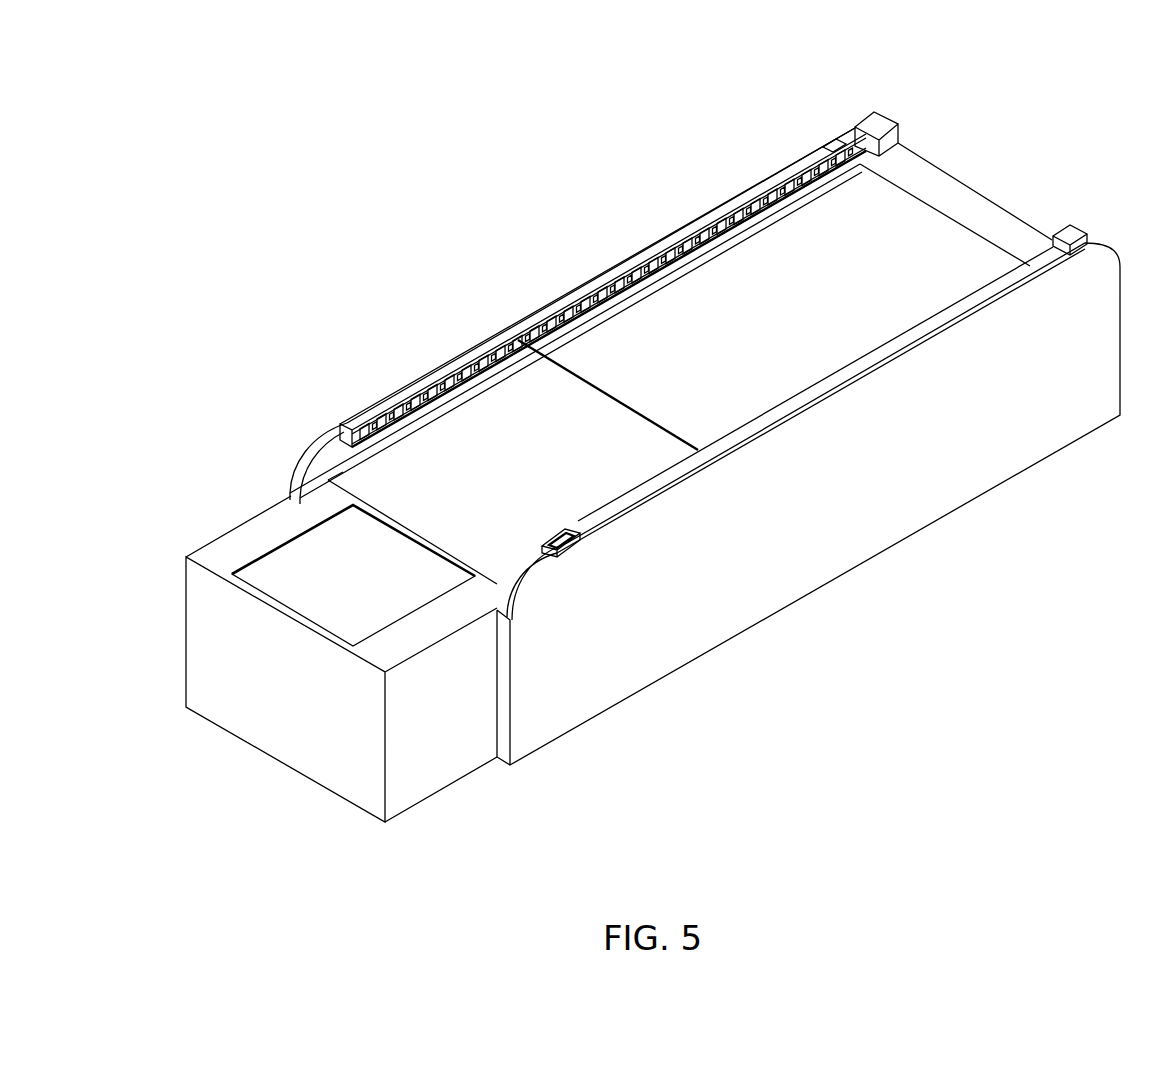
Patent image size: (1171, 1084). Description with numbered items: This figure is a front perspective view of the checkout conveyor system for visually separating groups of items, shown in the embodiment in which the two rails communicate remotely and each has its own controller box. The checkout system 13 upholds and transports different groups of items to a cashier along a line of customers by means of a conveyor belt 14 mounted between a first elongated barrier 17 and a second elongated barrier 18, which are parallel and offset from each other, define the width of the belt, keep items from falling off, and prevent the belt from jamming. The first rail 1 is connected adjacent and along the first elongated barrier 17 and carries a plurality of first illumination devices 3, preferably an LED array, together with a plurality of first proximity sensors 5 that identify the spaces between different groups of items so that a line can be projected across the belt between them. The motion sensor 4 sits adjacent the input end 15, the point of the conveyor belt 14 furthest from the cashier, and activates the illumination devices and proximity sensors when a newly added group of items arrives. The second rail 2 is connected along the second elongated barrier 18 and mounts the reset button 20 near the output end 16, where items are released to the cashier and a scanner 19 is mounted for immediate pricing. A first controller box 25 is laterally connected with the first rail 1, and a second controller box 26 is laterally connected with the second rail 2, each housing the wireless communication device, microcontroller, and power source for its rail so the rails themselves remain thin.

The first rail 1 is at (714, 212).
The second rail 2 is at (1040, 264).
The plurality of first illumination devices 3 is at (376, 425).
The motion sensor 4 is at (830, 140).
The plurality of first proximity sensors 5 is at (408, 406).
The checkout system 13 is at (243, 476).
The conveyor belt 14 is at (336, 455).
The input end 15 is at (925, 188).
The output end 16 is at (410, 523).
The first elongated barrier 17 is at (298, 478).
The second elongated barrier 18 is at (516, 592).
The scanner 19 is at (240, 572).
The reset button 20 is at (561, 530).
The first controller box 25 is at (893, 134).
The second controller box 26 is at (1086, 239).